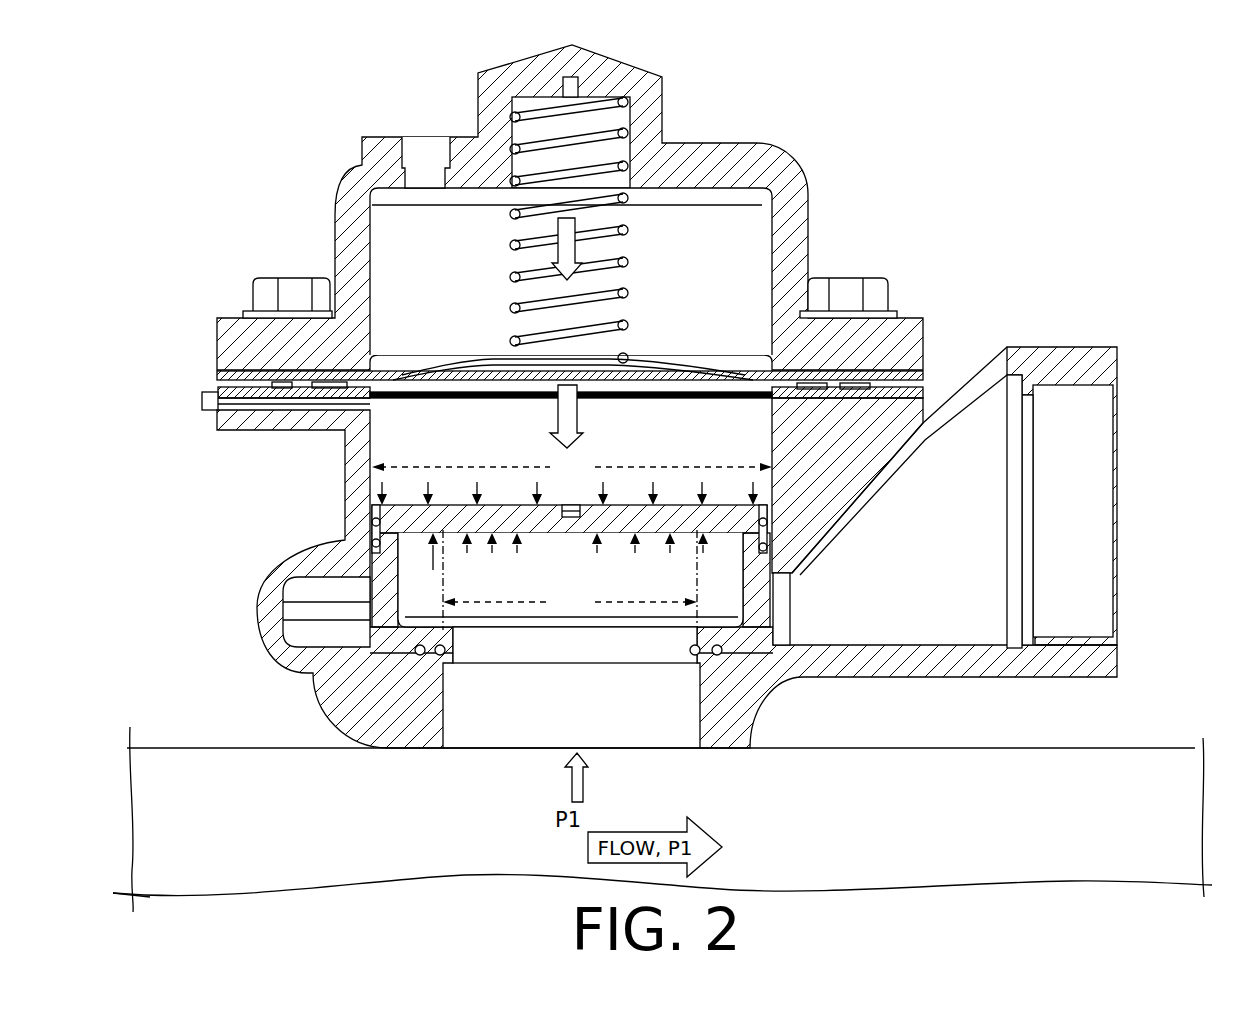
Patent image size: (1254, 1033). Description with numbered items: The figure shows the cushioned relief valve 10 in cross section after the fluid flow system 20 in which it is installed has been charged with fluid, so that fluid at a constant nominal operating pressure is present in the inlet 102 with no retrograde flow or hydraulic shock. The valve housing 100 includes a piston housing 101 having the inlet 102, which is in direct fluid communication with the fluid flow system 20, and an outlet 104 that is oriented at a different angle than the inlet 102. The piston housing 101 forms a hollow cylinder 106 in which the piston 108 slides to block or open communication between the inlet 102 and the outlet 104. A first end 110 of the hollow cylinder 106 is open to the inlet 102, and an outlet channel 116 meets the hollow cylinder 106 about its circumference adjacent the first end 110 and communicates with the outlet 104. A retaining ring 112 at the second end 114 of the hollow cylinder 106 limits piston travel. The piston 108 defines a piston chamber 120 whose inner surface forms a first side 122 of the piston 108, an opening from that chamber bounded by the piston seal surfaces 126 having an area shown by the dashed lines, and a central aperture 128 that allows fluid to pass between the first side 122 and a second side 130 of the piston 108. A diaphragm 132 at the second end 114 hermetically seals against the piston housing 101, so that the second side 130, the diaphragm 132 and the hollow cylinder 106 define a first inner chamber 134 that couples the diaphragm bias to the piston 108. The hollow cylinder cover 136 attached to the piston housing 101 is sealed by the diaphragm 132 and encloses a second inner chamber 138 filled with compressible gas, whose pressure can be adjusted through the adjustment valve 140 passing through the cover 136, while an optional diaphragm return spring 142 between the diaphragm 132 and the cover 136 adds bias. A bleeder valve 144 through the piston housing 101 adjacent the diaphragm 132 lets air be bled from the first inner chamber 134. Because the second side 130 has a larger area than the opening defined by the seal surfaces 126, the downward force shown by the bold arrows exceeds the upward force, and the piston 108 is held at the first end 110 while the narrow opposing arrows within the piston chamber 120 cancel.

The cushioned relief valve 10 is at (318, 64).
The fluid flow system 20 is at (273, 829).
The valve housing 100 is at (925, 330).
The piston housing 101 is at (666, 595).
The inlet 102 is at (492, 750).
The outlet 104 is at (1120, 483).
The hollow cylinder 106 is at (370, 572).
The piston 108 is at (752, 562).
The first end of the hollow cylinder 110 is at (500, 660).
The retaining ring 112 is at (347, 388).
The second end of the hollow cylinder 114 is at (437, 378).
The outlet channel 116 is at (312, 599).
The piston chamber 120 is at (529, 618).
The first side of the piston 122 is at (372, 543).
The piston seal surface 126 is at (420, 655).
The central aperture 128 is at (571, 533).
The second side of the piston 130 is at (473, 525).
The diaphragm 132 is at (620, 364).
The first inner chamber 134 is at (700, 446).
The hollow cylinder cover 136 is at (570, 207).
The second inner chamber 138 is at (690, 251).
The adjustment valve 140 is at (420, 137).
The diaphragm return spring 142 is at (512, 274).
The bleeder valve 144 is at (205, 398).